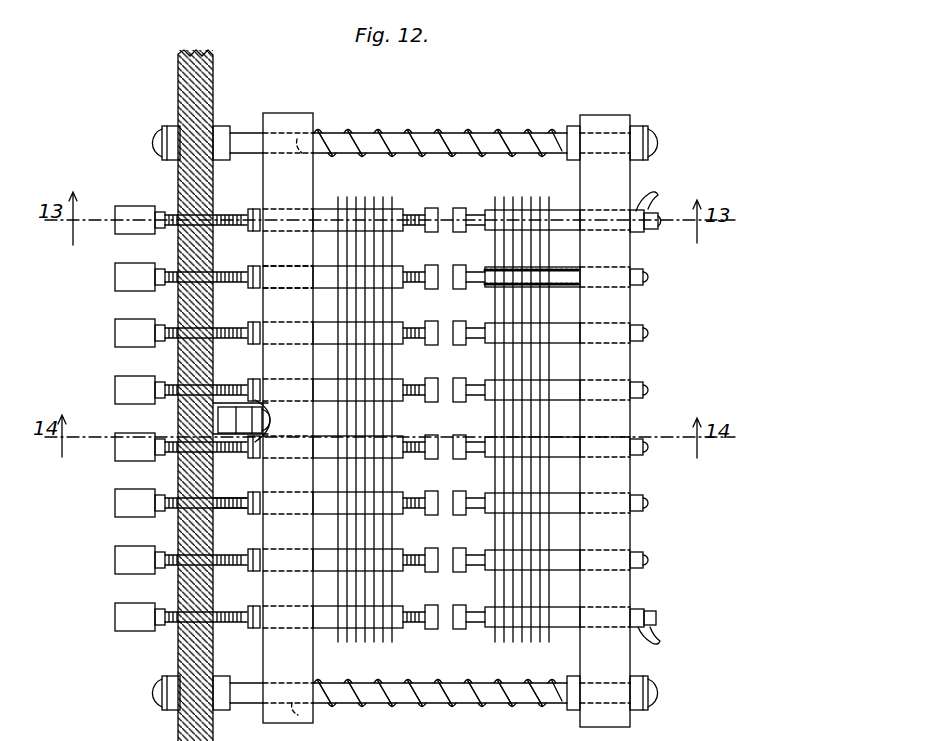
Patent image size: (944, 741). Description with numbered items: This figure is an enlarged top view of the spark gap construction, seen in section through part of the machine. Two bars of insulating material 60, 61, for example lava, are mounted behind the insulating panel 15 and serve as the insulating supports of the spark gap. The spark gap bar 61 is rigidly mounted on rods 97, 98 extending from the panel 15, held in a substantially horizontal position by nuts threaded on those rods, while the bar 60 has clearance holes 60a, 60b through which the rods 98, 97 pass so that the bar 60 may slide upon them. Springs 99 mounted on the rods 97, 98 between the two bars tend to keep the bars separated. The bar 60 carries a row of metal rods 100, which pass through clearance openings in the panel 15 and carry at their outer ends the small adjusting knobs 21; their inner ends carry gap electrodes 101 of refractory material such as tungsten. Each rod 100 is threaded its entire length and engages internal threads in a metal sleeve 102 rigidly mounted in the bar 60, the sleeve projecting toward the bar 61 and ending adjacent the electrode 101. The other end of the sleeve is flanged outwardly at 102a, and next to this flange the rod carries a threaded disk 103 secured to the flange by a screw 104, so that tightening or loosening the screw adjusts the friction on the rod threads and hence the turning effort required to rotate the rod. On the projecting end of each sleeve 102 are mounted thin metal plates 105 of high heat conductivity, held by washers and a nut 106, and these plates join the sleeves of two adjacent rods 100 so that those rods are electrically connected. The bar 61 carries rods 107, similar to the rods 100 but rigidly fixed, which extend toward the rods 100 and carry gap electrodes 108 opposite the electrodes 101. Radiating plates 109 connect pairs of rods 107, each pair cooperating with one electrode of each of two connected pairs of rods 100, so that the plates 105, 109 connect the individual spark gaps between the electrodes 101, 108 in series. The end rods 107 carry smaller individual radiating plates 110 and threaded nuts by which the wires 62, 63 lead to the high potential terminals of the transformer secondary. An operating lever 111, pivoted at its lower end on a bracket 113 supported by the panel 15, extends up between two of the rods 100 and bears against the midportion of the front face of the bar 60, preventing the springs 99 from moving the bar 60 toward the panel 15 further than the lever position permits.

The insulating panel 15 is at (178, 72).
The adjusting knobs 21 is at (117, 330).
The bar of insulating material 60 is at (273, 115).
The clearance hole 60a is at (303, 712).
The clearance hole 60b is at (305, 130).
The spark gap bar 61 is at (598, 120).
The wire 62 is at (660, 640).
The wire 63 is at (653, 200).
The rod 97 is at (248, 130).
The rod 98 is at (252, 697).
The springs 99 is at (482, 130).
The metal rods 100 is at (243, 212).
The gap electrodes 101 is at (428, 210).
The metal sleeve 102 is at (279, 210).
The flange 102a is at (256, 285).
The threaded disk 103 is at (253, 230).
The screw 104 is at (236, 510).
The thin metal plates 105 is at (378, 198).
The nut 106 is at (407, 401).
The rods 107 is at (474, 218).
The gap electrodes 108 is at (459, 264).
The radiating plates 109 is at (556, 284).
The radiating plates 110 is at (548, 203).
The operating lever 111 is at (277, 402).
The bracket 113 is at (272, 445).